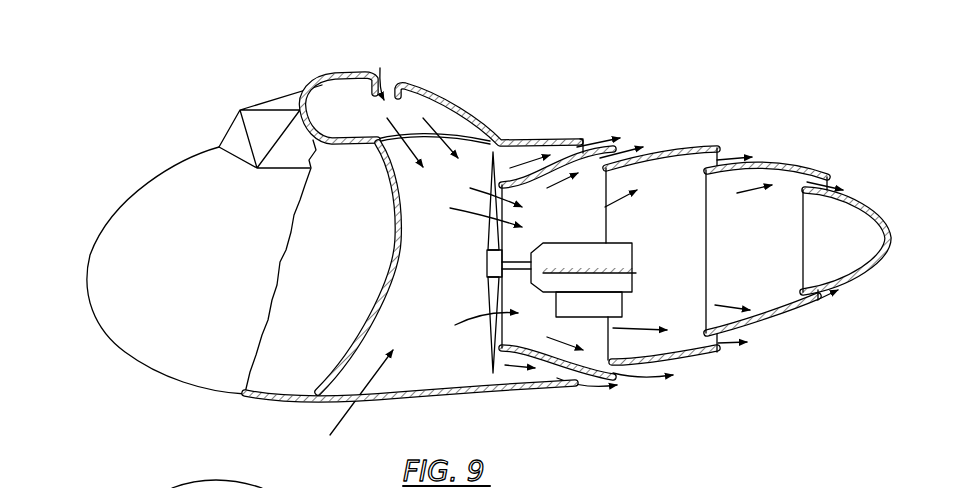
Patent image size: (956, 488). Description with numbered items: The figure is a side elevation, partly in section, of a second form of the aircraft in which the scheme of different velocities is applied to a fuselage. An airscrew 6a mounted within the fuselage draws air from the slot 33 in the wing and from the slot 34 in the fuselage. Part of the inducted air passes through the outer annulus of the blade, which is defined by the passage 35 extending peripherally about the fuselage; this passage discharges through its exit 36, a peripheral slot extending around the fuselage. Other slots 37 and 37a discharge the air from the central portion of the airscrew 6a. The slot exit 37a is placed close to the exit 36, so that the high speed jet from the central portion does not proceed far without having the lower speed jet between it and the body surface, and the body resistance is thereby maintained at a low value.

The airscrew 6a is at (493, 300).
The slot in the wing 33 is at (390, 83).
The slot in the fuselage 34 is at (362, 400).
The passage 35 is at (530, 152).
The exit 36 is at (583, 150).
The slot 37 is at (718, 153).
The slot exit 37a is at (613, 150).